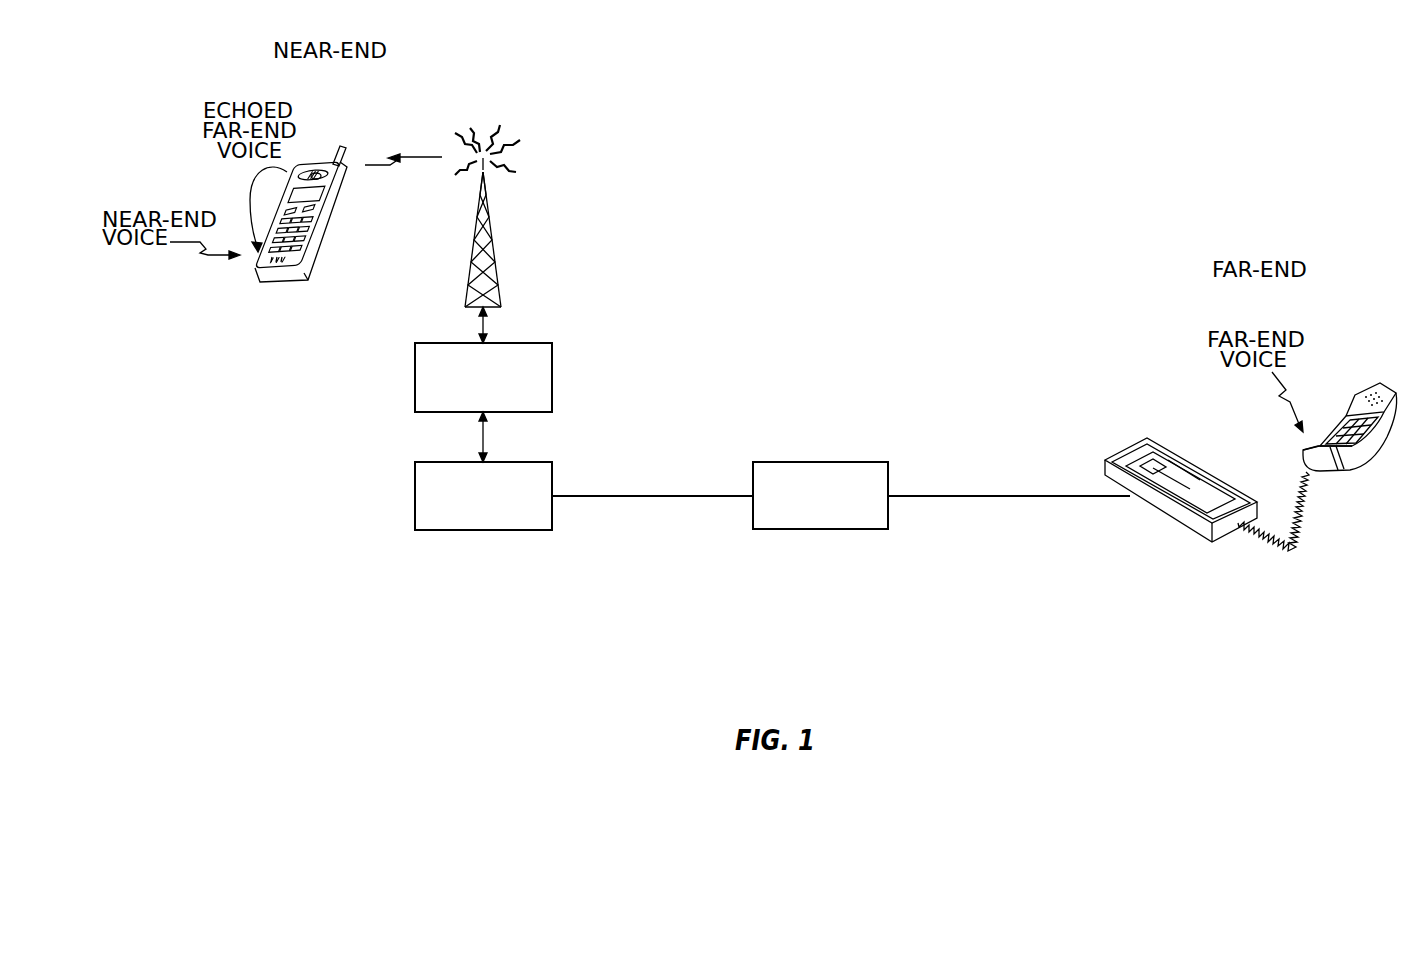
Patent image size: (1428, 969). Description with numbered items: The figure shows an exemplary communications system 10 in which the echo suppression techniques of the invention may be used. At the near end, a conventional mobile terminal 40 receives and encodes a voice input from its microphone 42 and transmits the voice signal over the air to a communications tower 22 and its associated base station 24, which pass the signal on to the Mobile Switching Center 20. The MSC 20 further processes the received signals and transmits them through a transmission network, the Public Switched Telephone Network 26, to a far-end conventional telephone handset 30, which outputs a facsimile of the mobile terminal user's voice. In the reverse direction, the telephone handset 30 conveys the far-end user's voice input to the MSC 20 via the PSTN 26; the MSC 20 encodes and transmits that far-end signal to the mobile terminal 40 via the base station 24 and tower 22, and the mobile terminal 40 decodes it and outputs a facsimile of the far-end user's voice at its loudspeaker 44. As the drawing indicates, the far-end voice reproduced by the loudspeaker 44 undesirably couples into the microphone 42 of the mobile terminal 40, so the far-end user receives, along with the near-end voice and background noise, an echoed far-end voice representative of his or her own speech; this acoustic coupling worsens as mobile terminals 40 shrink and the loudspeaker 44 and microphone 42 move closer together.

The communications system 10 is at (1076, 170).
The Mobile Switching Center 20 is at (448, 530).
The communications tower 22 is at (490, 222).
The base station 24 is at (448, 412).
The Public Switched Telephone Network 26 is at (838, 462).
The far-end conventional telephone handset 30 is at (1353, 467).
The near-end mobile terminal 40 is at (328, 230).
The microphone 42 is at (278, 268).
The loudspeaker 44 is at (312, 170).